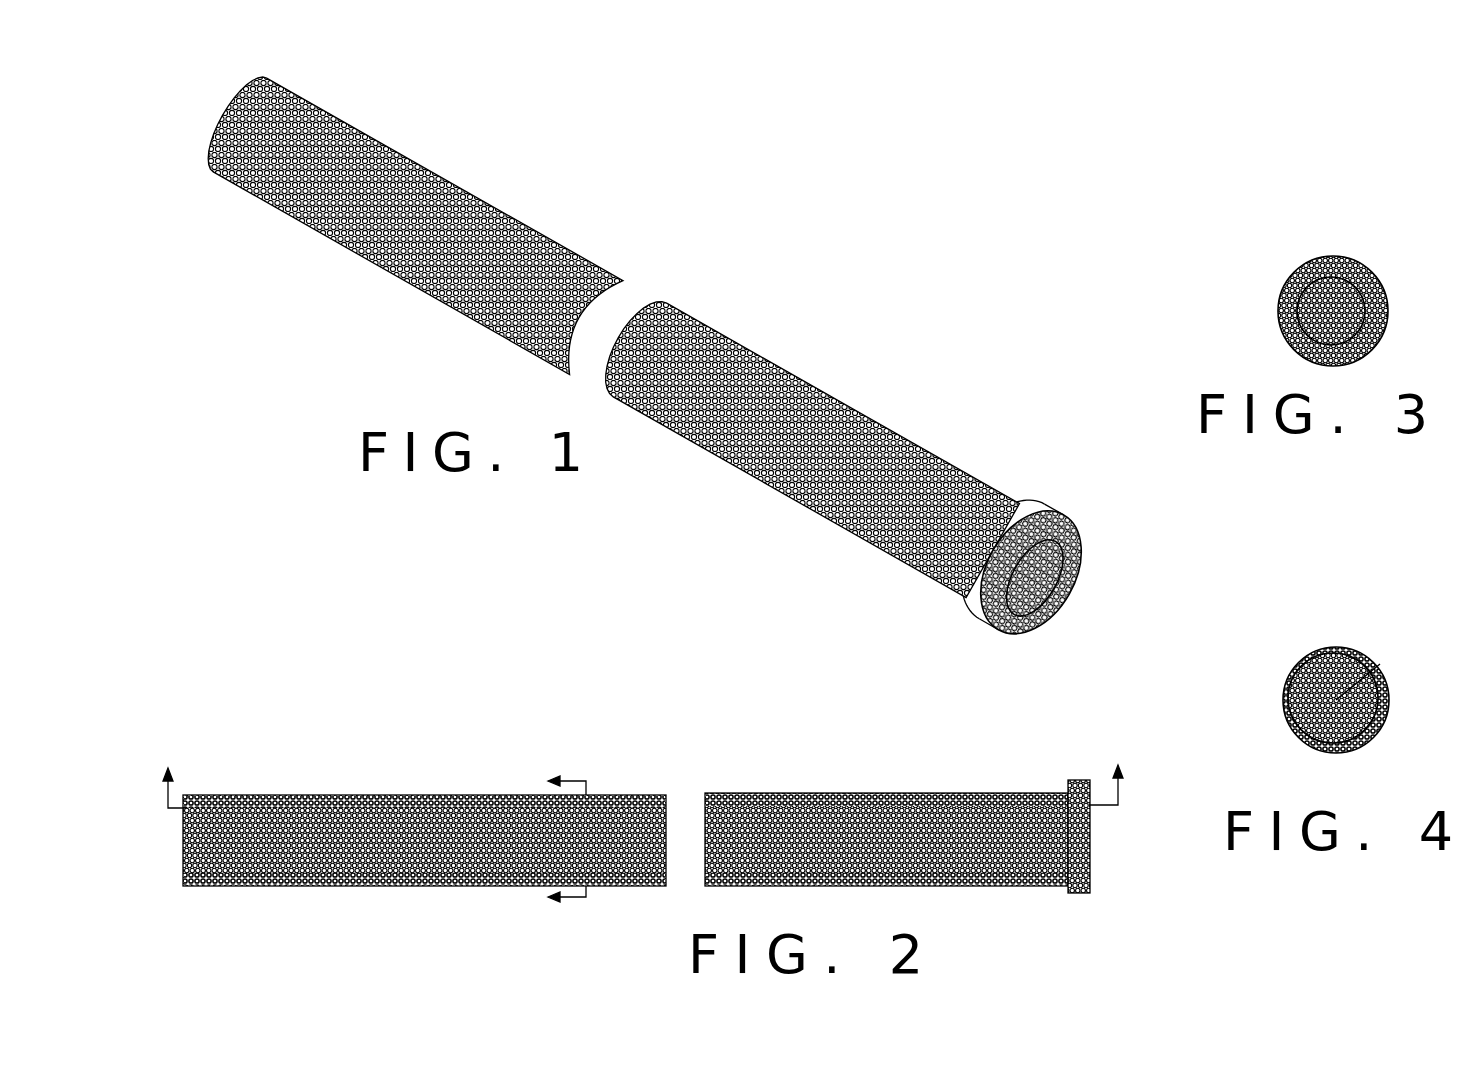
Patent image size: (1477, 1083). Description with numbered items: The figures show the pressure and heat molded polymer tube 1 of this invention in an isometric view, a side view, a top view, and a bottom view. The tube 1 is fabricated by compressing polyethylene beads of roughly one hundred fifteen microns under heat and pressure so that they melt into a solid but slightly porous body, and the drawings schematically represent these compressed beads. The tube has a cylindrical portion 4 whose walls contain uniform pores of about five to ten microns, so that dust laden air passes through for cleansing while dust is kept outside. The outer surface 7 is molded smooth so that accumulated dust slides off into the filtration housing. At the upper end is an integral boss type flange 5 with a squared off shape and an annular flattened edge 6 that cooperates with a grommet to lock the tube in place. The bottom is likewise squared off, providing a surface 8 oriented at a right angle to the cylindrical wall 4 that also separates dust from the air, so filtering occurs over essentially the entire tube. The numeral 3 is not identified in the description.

In FIG. 1, the configured polymer tube 1 is at (686, 364).
In FIG. 2, the elongated body 3 is at (174, 828).
In FIG. 1, the cylindrical portion 4 is at (545, 226).
In FIG. 1, the boss type flange 5 is at (1080, 553).
In FIG. 2, the boss type flange 5 is at (555, 838).
In FIG. 3, the boss type flange 5 is at (1370, 265).
In FIG. 2, the annular flattened edge 6 is at (1067, 888).
In FIG. 3, the annular flattened edge 6 is at (1272, 316).
In FIG. 1, the outer surface 7 is at (727, 466).
In FIG. 4, the outer surface 7 is at (1272, 697).
In FIG. 4, the bottom surface 8 is at (1372, 656).